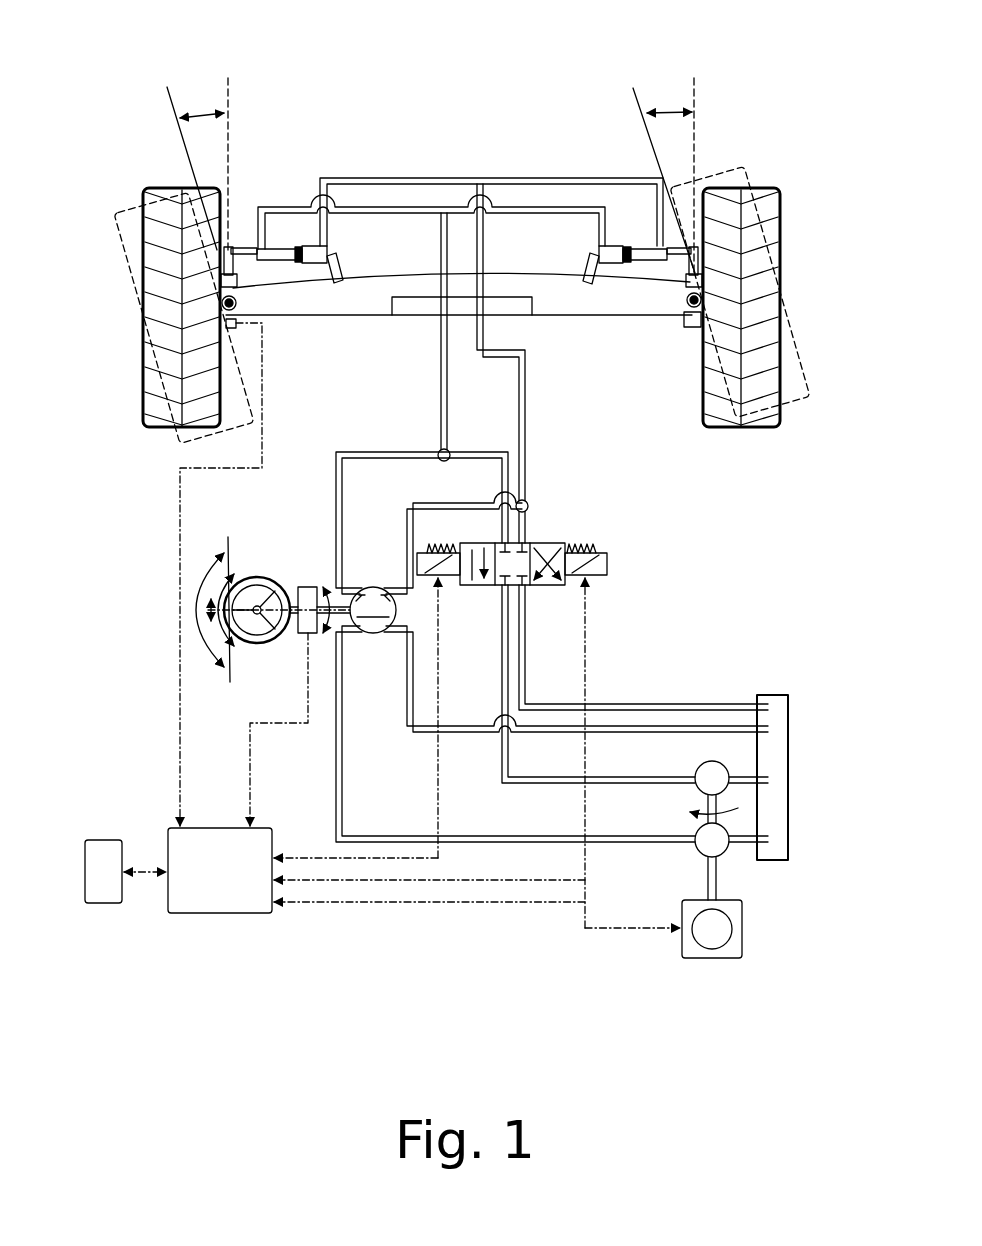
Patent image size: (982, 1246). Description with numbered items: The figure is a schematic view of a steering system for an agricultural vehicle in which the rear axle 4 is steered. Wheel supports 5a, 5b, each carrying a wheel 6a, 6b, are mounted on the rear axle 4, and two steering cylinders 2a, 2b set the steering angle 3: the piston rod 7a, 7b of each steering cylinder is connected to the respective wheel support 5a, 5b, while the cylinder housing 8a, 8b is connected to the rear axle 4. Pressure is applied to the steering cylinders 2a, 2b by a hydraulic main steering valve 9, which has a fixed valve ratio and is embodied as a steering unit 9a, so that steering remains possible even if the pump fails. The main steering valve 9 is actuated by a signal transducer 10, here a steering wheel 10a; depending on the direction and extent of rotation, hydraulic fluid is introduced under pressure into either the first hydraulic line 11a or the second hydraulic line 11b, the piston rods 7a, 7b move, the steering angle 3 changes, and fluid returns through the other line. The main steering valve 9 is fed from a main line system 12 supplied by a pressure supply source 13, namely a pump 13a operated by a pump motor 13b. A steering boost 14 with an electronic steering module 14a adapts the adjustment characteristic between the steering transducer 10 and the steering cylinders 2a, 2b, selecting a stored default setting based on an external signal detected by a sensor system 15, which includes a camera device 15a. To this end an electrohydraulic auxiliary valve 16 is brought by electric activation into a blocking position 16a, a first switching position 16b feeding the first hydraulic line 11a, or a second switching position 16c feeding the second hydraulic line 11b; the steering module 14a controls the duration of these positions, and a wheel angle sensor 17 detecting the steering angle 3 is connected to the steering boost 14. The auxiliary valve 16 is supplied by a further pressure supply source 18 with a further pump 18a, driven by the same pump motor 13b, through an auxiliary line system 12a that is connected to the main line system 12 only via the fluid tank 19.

The steering cylinder 2a is at (321, 198).
The steering cylinder 2b is at (577, 198).
The steering angle 3 is at (198, 112).
The rear axle 4 is at (580, 320).
The wheel support 5a is at (247, 287).
The wheel support 5b is at (667, 287).
The wheel 6a is at (155, 193).
The wheel 6b is at (763, 202).
The piston rod 7a is at (248, 248).
The piston rod 7b is at (673, 248).
The cylinder housing 8a is at (313, 245).
The cylinder housing 8b is at (612, 243).
The hydraulic main steering valve 9 is at (552, 592).
The steering unit 9a is at (370, 587).
The signal transducer 10 is at (273, 655).
The steering wheel 10a is at (270, 577).
The first hydraulic line 11a is at (442, 385).
The second hydraulic line 11b is at (525, 410).
The main line system 12 is at (497, 843).
The auxiliary line system 12a is at (603, 705).
The pressure supply source 13 is at (630, 908).
The pump 13a is at (705, 843).
The pump motor 13b is at (740, 958).
The steering boost 14 is at (376, 915).
The electronic steering module 14a is at (235, 905).
The sensor system 15 is at (142, 941).
The camera device 15a is at (102, 892).
The hydraulic auxiliary valve 16 is at (551, 705).
The blocking position 16a is at (523, 553).
The first switching position 16b is at (475, 585).
The second switching position 16c is at (545, 583).
The wheel angle sensor 17 is at (240, 330).
The further pressure supply source 18 is at (654, 700).
The further pump 18a is at (710, 772).
The fluid tank 19 is at (778, 747).